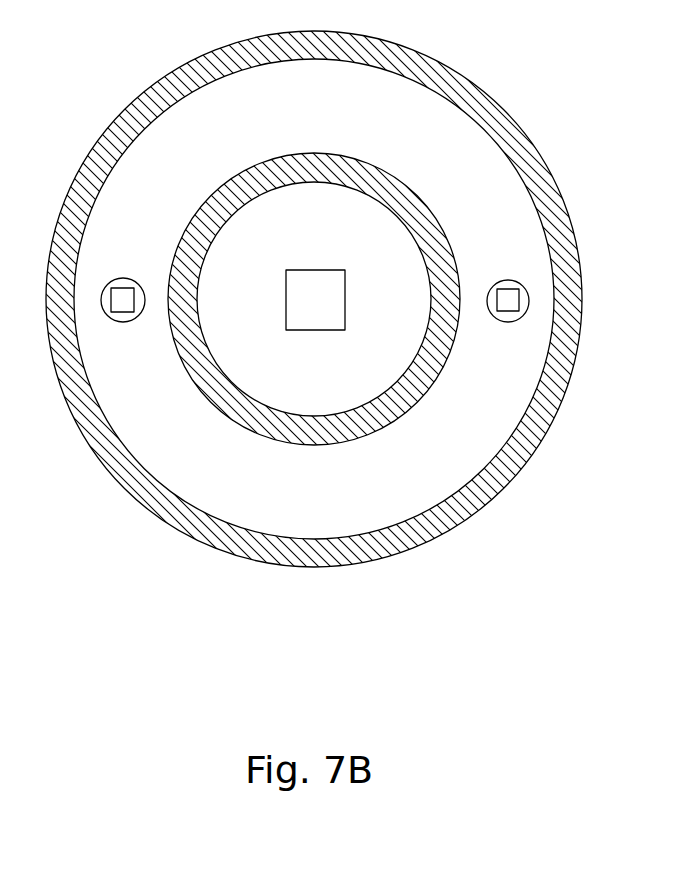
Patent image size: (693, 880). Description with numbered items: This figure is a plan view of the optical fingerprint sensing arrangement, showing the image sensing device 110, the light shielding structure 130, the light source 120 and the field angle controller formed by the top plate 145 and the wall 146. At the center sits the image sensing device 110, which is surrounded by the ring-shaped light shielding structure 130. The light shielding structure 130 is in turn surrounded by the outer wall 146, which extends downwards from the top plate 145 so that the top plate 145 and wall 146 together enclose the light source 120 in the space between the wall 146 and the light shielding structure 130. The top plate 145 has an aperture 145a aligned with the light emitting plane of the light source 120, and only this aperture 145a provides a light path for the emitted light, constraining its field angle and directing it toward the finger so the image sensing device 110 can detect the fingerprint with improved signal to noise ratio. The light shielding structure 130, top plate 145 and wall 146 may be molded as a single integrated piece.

The image sensing device 110 is at (308, 313).
The light source 120 is at (508, 302).
The light shielding structure 130 is at (378, 417).
The top plate 145 is at (510, 197).
The aperture 145a is at (516, 277).
The wall 146 is at (565, 353).